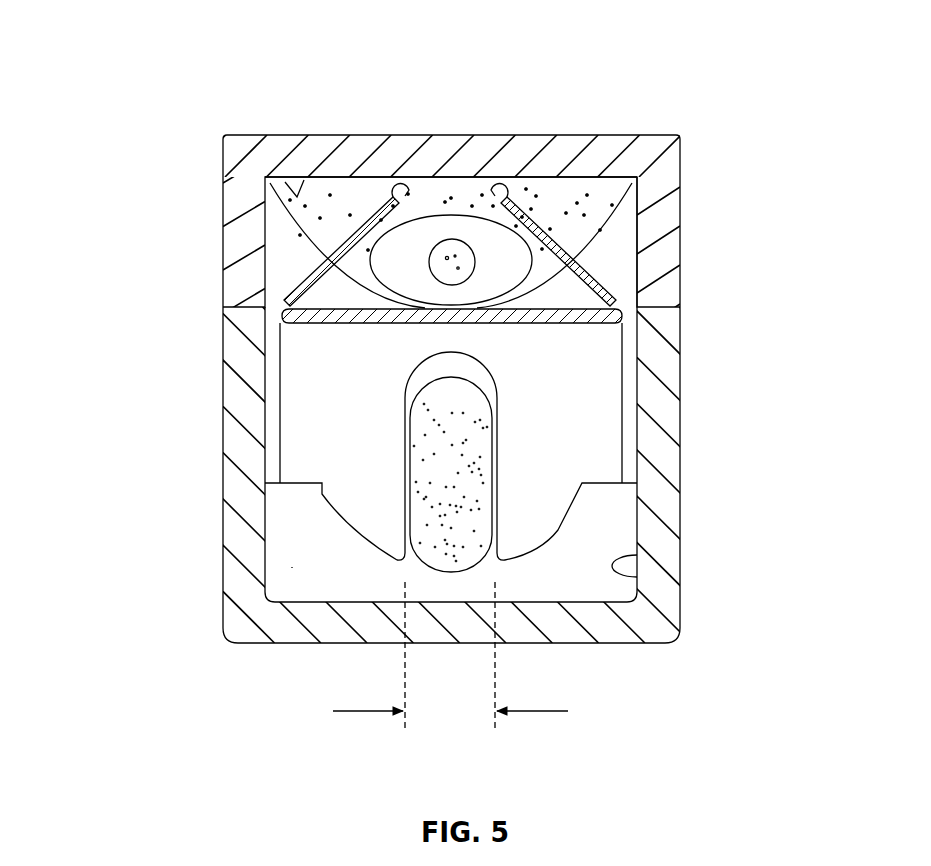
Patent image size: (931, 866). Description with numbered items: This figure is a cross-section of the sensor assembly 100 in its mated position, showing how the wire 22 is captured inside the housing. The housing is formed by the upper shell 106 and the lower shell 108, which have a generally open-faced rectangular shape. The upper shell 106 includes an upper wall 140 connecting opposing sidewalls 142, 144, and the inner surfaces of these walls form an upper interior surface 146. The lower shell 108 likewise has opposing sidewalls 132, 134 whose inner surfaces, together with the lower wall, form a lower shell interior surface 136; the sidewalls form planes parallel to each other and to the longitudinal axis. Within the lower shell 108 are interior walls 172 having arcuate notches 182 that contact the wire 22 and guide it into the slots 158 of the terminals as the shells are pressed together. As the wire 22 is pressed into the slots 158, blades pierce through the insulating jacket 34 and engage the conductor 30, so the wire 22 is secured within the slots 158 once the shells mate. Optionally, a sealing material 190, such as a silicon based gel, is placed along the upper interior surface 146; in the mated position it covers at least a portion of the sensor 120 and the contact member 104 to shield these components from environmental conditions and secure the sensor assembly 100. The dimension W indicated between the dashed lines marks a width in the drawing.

The sensor assembly 100 is at (190, 58).
The upper shell 106 is at (677, 122).
The lower shell 108 is at (672, 645).
The upper wall 140 is at (320, 135).
The sidewall 142 is at (681, 245).
The sidewall 144 is at (223, 253).
The upper interior surface 146 is at (297, 197).
The contact member 104 is at (606, 352).
The sensor 120 is at (453, 239).
The sealing material 190 is at (577, 192).
The insulating jacket 34 is at (430, 373).
The wire 22 is at (500, 413).
The conductor 30 is at (462, 495).
The slot 158 is at (405, 510).
The arcuate notch 182 is at (557, 531).
The sidewall 134 is at (223, 530).
The sidewall 132 is at (683, 520).
The lower shell interior surface 136 is at (630, 577).
The interior wall 172 is at (292, 567).
The width dimension W is at (537, 713).